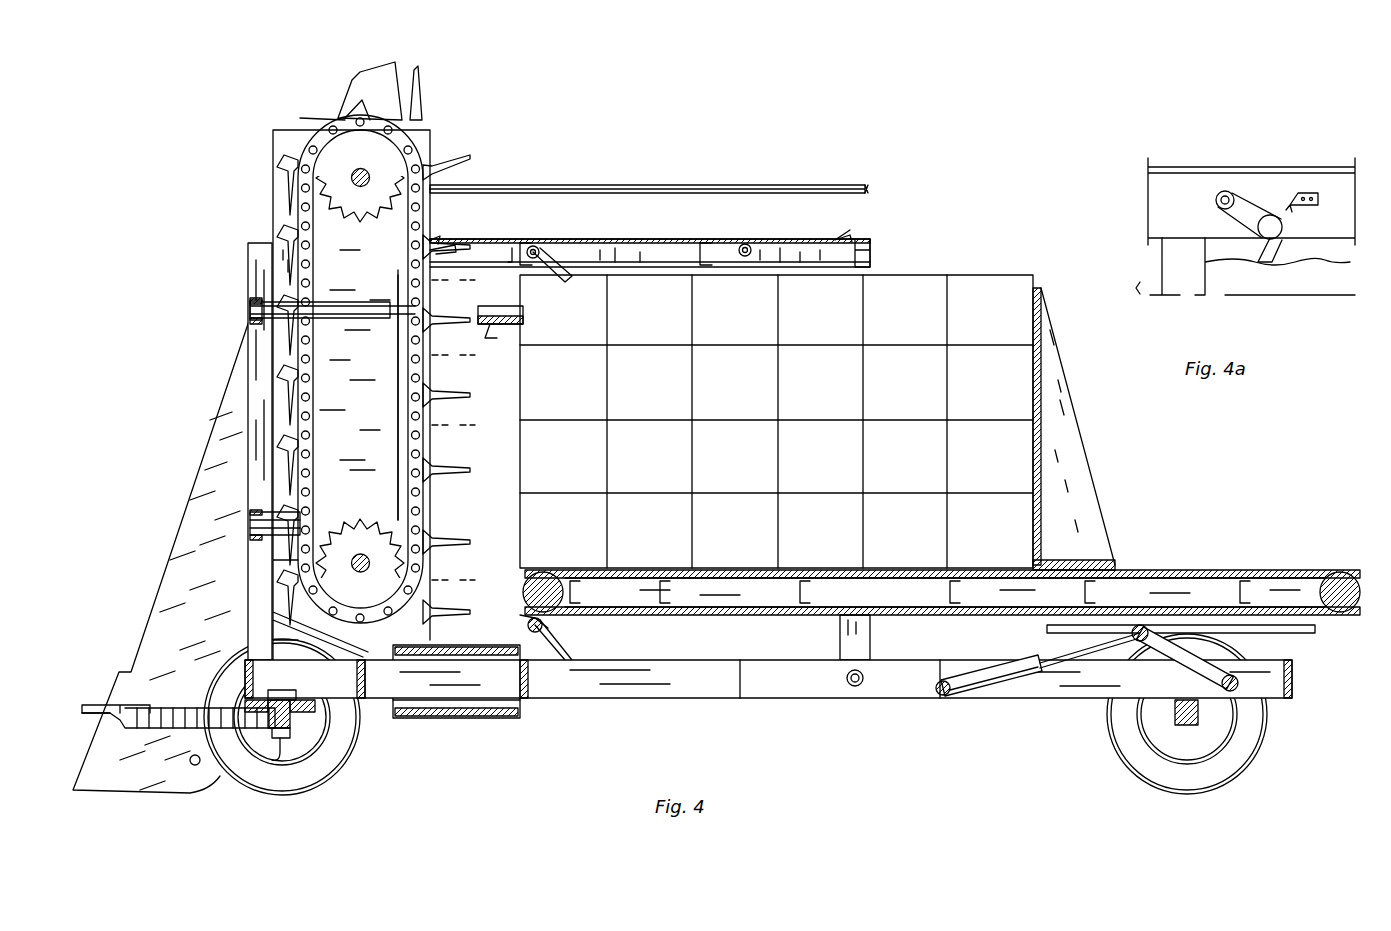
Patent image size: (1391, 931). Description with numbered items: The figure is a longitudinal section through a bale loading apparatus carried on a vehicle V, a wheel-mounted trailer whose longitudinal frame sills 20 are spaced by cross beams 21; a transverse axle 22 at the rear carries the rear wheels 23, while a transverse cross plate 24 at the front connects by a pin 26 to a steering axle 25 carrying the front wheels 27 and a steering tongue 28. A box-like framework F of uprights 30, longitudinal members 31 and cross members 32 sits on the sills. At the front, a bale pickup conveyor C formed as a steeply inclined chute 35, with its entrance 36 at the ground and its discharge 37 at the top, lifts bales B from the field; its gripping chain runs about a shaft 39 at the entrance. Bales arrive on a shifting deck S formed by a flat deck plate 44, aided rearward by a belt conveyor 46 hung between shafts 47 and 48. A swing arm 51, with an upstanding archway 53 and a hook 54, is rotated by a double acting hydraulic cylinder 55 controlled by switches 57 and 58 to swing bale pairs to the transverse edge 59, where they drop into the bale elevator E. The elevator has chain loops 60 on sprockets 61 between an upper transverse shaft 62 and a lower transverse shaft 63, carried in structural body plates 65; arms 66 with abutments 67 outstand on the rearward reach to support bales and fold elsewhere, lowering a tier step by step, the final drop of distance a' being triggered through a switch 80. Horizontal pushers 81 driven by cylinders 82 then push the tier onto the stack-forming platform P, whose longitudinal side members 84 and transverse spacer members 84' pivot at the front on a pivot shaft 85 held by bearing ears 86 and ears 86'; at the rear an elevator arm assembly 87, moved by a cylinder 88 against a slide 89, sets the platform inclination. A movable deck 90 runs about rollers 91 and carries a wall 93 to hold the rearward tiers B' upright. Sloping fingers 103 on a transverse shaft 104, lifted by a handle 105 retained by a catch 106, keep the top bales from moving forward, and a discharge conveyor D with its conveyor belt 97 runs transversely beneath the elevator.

In FIG. 4, the longitudinal frame sills 20 is at (690, 688).
In FIG. 4, the cross beams 21 is at (936, 668).
In FIG. 4, the transverse axle 22 is at (1183, 724).
In FIG. 4, the rear wheels 23 is at (1250, 722).
In FIG. 4, the transverse cross plate 24 is at (298, 694).
In FIG. 4, the steering axle 25 is at (292, 718).
In FIG. 4, the pin 26 is at (278, 742).
In FIG. 4, the front wheels 27 is at (332, 752).
In FIG. 4, the steering tongue 28 is at (165, 708).
In FIG. 4, the uprights 30 is at (258, 455).
In FIG. 4, the longitudinal members 31 is at (770, 250).
In FIG. 4A, the longitudinal members 31 is at (1148, 210).
In FIG. 4, the cross members 32 is at (871, 252).
In FIG. 4, the chute 35 is at (182, 512).
In FIG. 4, the entrance 36 is at (100, 705).
In FIG. 4, the discharge 37 is at (354, 78).
In FIG. 4, the shaft 39 is at (190, 761).
In FIG. 4, the deck plate 44 is at (606, 246).
In FIG. 4A, the deck plate 44 is at (1257, 172).
In FIG. 4, the belt conveyor 46 is at (560, 242).
In FIG. 4, the shaft 47 is at (456, 252).
In FIG. 4, the shaft 48 is at (745, 246).
In FIG. 4, the swing arm 51 is at (582, 186).
In FIG. 4, the archway 53 is at (422, 84).
In FIG. 4, the hook 54 is at (866, 191).
In FIG. 4, the double acting hydraulic cylinder 55 is at (510, 313).
In FIG. 4, the switch 57 is at (440, 236).
In FIG. 4, the switch 58 is at (840, 240).
In FIG. 4, the transverse edge 59 is at (512, 244).
In FIG. 4, the chain loops 60 is at (420, 150).
In FIG. 4, the sprockets 61 is at (370, 226).
In FIG. 4, the upper transverse shaft 62 is at (370, 178).
In FIG. 4, the lower transverse shaft 63 is at (367, 563).
In FIG. 4, the structural body plates 65 is at (284, 232).
In FIG. 4, the arms 66 is at (290, 212).
In FIG. 4, the abutment 67 is at (294, 165).
In FIG. 4, the switch 80 is at (444, 512).
In FIG. 4, the horizontal pushers 81 is at (398, 400).
In FIG. 4, the cylinders 82 is at (345, 305).
In FIG. 4, the longitudinal side members 84 is at (945, 607).
In FIG. 4, the transverse spacer members 84' is at (910, 592).
In FIG. 4, the pivot shaft 85 is at (528, 625).
In FIG. 4, the structural bearing ears 86 is at (565, 640).
In FIG. 4, the ears 86' is at (516, 608).
In FIG. 4, the elevator arm assembly 87 is at (1196, 666).
In FIG. 4, the cylinder 88 is at (1010, 668).
In FIG. 4, the slide 89 is at (1288, 634).
In FIG. 4, the movable deck 90 is at (1160, 572).
In FIG. 4, the rollers 91 is at (548, 574).
In FIG. 4, the wall 93 is at (1042, 434).
In FIG. 4, the conveyor belt 97 is at (474, 645).
In FIG. 4, the sloping fingers 103 is at (564, 290).
In FIG. 4, the transverse shaft 104 is at (536, 248).
In FIG. 4A, the transverse shaft 104 is at (1216, 197).
In FIG. 4A, the handle 105 is at (1248, 205).
In FIG. 4A, the catch 106 is at (1312, 205).
In FIG. 4, the bales B is at (776, 421).
In FIG. 4, the bale stack B' is at (1011, 252).
In FIG. 4, the bale pickup conveyor C is at (152, 582).
In FIG. 4, the discharge conveyor D is at (484, 722).
In FIG. 4, the bale elevator E is at (286, 124).
In FIG. 4, the framework F is at (246, 273).
In FIG. 4, the stack-forming platform P is at (1142, 542).
In FIG. 4, the shifting deck S is at (734, 182).
In FIG. 4, the vehicle V is at (612, 724).
In FIG. 4, the spacing dimension a' is at (476, 553).